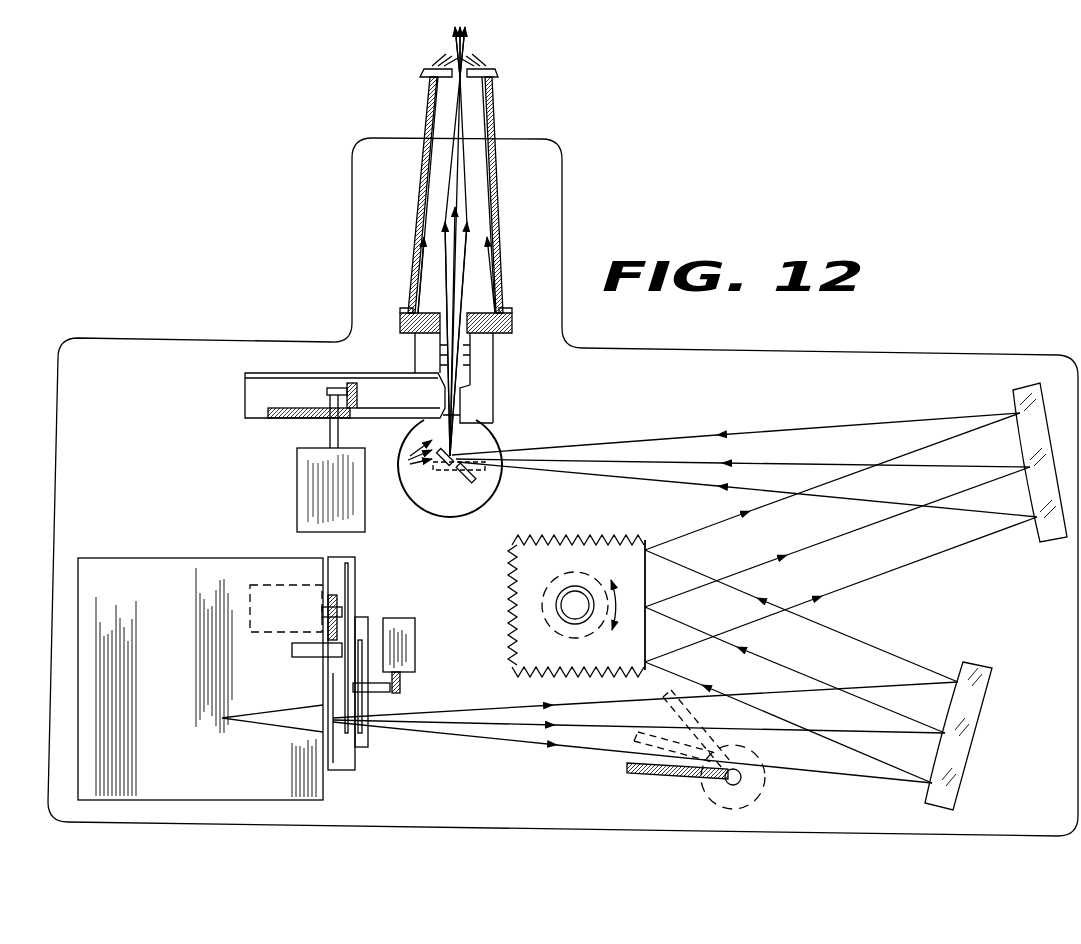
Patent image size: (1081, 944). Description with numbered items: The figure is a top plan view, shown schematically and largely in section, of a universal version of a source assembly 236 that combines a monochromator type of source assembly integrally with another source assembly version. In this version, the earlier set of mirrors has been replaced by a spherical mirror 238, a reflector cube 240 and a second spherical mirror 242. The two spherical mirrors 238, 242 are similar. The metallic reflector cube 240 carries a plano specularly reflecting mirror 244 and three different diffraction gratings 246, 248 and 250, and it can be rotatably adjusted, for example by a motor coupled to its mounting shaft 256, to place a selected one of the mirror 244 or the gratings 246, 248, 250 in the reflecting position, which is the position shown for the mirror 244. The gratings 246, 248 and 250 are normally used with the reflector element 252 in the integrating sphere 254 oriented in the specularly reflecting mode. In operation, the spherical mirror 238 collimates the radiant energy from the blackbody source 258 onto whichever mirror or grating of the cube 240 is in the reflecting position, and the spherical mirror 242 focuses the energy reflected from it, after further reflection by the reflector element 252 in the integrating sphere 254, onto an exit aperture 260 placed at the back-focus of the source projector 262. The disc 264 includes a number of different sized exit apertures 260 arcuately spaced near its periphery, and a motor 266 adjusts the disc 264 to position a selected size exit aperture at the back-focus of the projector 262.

The source assembly 236 is at (148, 316).
The spherical mirror 238 is at (963, 770).
The reflector cube 240 is at (530, 640).
The spherical mirror 242 is at (1062, 372).
The plano specularly reflecting mirror 244 is at (647, 586).
The diffraction grating 246 is at (577, 606).
The diffraction grating 248 is at (509, 583).
The diffraction grating 250 is at (572, 673).
The reflector element 252 is at (486, 486).
The integrating sphere 254 is at (420, 511).
The mounting shaft 256 is at (561, 586).
The blackbody source 258 is at (180, 558).
The exit aperture 260 is at (455, 416).
The source projector 262 is at (412, 243).
The disc 264 is at (402, 418).
The motor 266 is at (297, 498).